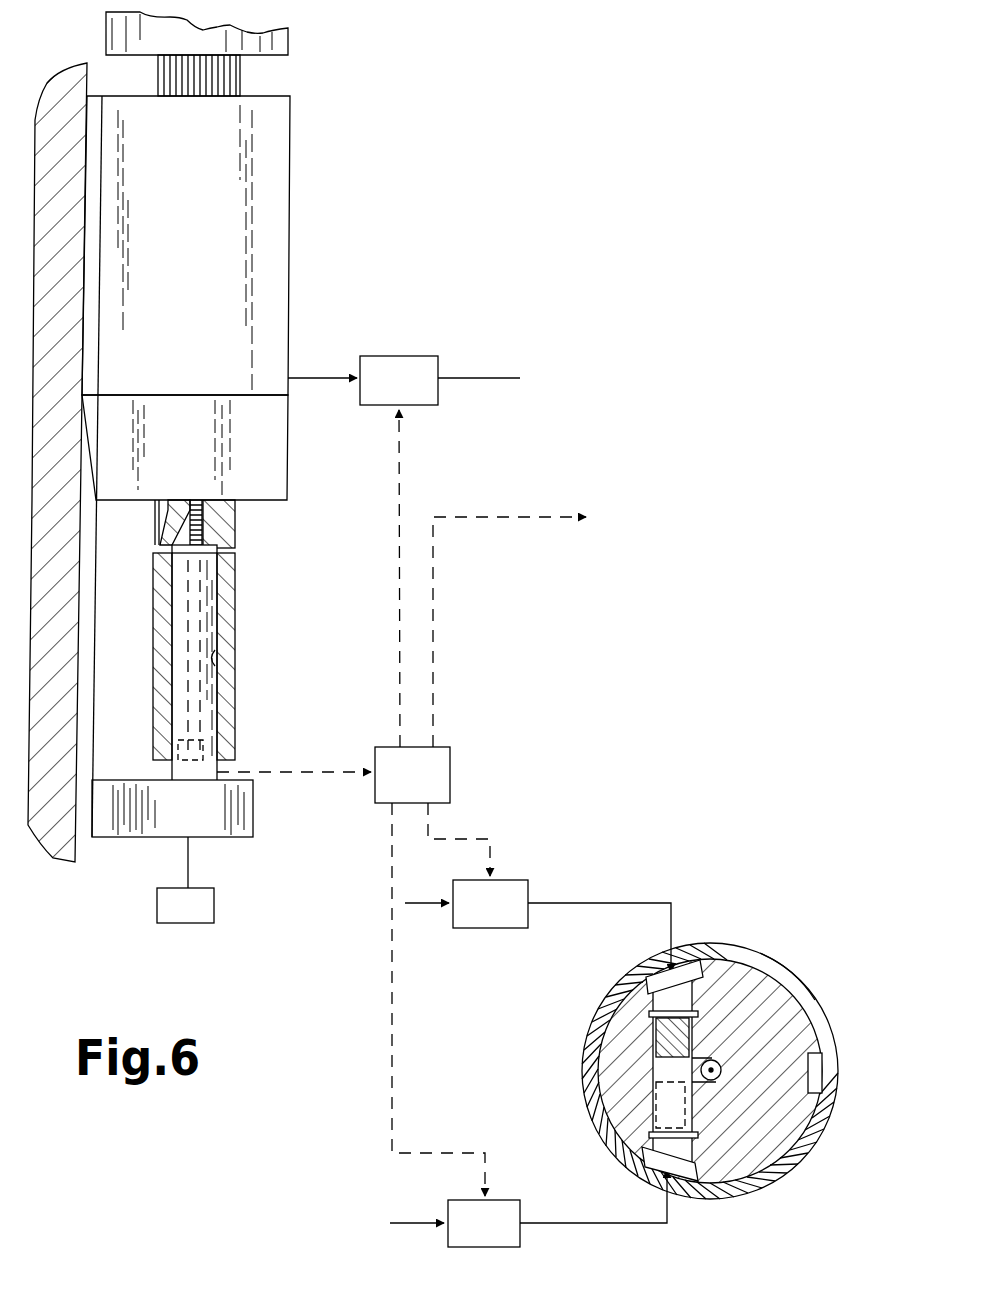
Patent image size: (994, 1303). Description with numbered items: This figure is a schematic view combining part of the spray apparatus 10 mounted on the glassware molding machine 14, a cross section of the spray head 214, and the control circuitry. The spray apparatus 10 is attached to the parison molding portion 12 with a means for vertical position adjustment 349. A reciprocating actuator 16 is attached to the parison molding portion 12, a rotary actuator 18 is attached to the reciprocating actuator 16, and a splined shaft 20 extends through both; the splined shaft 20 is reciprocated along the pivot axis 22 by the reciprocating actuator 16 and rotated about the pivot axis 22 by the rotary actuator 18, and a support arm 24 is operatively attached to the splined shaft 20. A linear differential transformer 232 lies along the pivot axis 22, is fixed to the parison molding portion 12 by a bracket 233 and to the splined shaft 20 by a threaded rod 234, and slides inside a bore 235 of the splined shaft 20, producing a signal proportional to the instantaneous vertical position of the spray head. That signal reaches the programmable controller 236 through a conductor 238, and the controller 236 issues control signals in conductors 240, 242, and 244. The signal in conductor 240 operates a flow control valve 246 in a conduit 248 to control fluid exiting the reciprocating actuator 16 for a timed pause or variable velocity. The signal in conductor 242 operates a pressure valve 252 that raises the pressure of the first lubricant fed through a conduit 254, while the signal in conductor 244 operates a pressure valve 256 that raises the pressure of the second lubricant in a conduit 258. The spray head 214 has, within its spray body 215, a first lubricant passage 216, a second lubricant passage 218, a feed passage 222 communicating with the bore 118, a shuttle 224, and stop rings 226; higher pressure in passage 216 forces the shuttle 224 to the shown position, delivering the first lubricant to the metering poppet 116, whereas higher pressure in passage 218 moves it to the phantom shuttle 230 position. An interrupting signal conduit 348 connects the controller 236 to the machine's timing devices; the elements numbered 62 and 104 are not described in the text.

In FIG. 6, the spray apparatus 10 is at (391, 212).
In FIG. 6, the parison molding portion 12 is at (80, 601).
In FIG. 6, the glassware molding machine 14 is at (80, 651).
In FIG. 6, the reciprocating actuator 16 is at (197, 219).
In FIG. 6, the rotary actuator 18 is at (194, 462).
In FIG. 6, the splined shaft 20 is at (242, 75).
In FIG. 6, the pivot axis 22 is at (193, 705).
In FIG. 6, the support arm 24 is at (290, 47).
In FIG. 4A, the pipe 62 is at (812, 1000).
In FIG. 4A, the port 104 is at (812, 1070).
In FIG. 4A, the metering poppet 116 is at (718, 1077).
In FIG. 4A, the bore 118 is at (712, 1061).
In FIG. 4A, the spray head 214 is at (836, 975).
In FIG. 4A, the spray body 215 is at (815, 1011).
In FIG. 4A, the first lubricant passage 216 is at (684, 1176).
In FIG. 4A, the second lubricant passage 218 is at (681, 968).
In FIG. 4A, the feed passage 222 is at (698, 1087).
In FIG. 4A, the shuttle 224 is at (654, 1048).
In FIG. 4A, the stop rings 226 is at (701, 1013).
In FIG. 4A, the phantom shuttle 230 is at (654, 1108).
In FIG. 6, the linear differential transformer 232 is at (195, 616).
In FIG. 6, the bracket 233 is at (243, 840).
In FIG. 6, the threaded rod 234 is at (203, 522).
In FIG. 6, the bore 235 is at (213, 658).
In FIG. 6, the programmable controller 236 is at (430, 791).
In FIG. 6, the conductor 238 is at (309, 771).
In FIG. 6, the conductor 240 is at (401, 445).
In FIG. 6, the conductor 242 is at (388, 1086).
In FIG. 6, the conductor 244 is at (485, 838).
In FIG. 6, the flow control valve 246 is at (416, 392).
In FIG. 6, the conduit 248 is at (509, 378).
In FIG. 6, the pressure valve 252 is at (502, 1238).
In FIG. 6, the conduit 254 is at (409, 1224).
In FIG. 6, the pressure valve 256 is at (508, 918).
In FIG. 6, the conduit 258 is at (425, 908).
In FIG. 6, the interrupting signal conduit 348 is at (557, 519).
In FIG. 6, the means for vertical position adjustment 349 is at (203, 919).